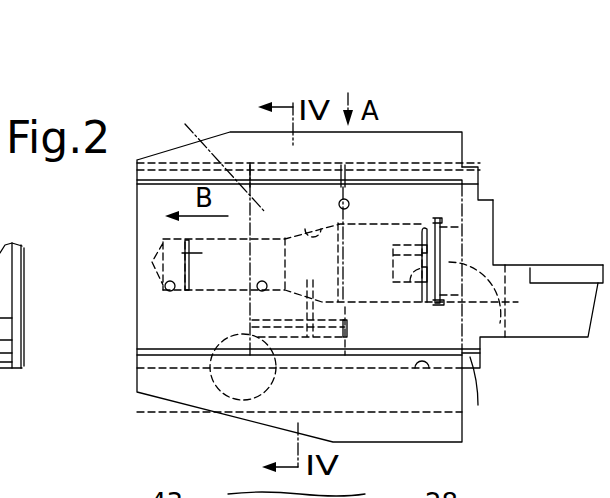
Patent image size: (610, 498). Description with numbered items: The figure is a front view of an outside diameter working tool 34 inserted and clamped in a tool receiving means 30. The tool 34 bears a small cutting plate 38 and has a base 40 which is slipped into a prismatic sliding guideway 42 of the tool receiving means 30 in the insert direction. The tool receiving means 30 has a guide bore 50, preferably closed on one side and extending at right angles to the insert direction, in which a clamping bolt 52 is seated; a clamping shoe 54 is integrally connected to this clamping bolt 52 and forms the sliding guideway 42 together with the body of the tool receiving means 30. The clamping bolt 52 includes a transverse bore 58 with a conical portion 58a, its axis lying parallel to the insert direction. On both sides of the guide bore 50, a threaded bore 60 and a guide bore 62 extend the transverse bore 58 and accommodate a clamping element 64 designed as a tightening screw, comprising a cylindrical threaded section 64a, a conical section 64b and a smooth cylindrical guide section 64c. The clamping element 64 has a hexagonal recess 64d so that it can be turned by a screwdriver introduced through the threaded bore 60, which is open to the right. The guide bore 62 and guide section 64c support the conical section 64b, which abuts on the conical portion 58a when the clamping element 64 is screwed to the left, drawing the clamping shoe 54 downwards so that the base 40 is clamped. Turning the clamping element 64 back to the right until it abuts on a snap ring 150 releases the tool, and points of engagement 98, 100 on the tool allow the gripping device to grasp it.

The tool receiving means 30 is at (160, 404).
The outside diameter working tool 34 is at (510, 243).
The small cutting plate 38 is at (573, 263).
The base 40 is at (483, 338).
The prismatic sliding guideway 42 is at (437, 372).
The guide bore 50 is at (350, 205).
The clamping bolt 52 is at (211, 155).
The clamping shoe 54 is at (440, 150).
The transverse bore 58 is at (255, 297).
The conical portion 58a is at (327, 223).
The threaded bore 60 is at (368, 308).
The guide bore 62 is at (172, 292).
The clamping element 64 is at (440, 188).
The cylindrical threaded section 64a is at (416, 216).
The conical section 64b is at (275, 371).
The smooth cylindrical guide section 64c is at (180, 257).
The hexagonal recess 64d is at (530, 316).
The point of engagement 98 is at (482, 198).
The point of engagement 100 is at (495, 341).
The snap ring 150 is at (492, 341).